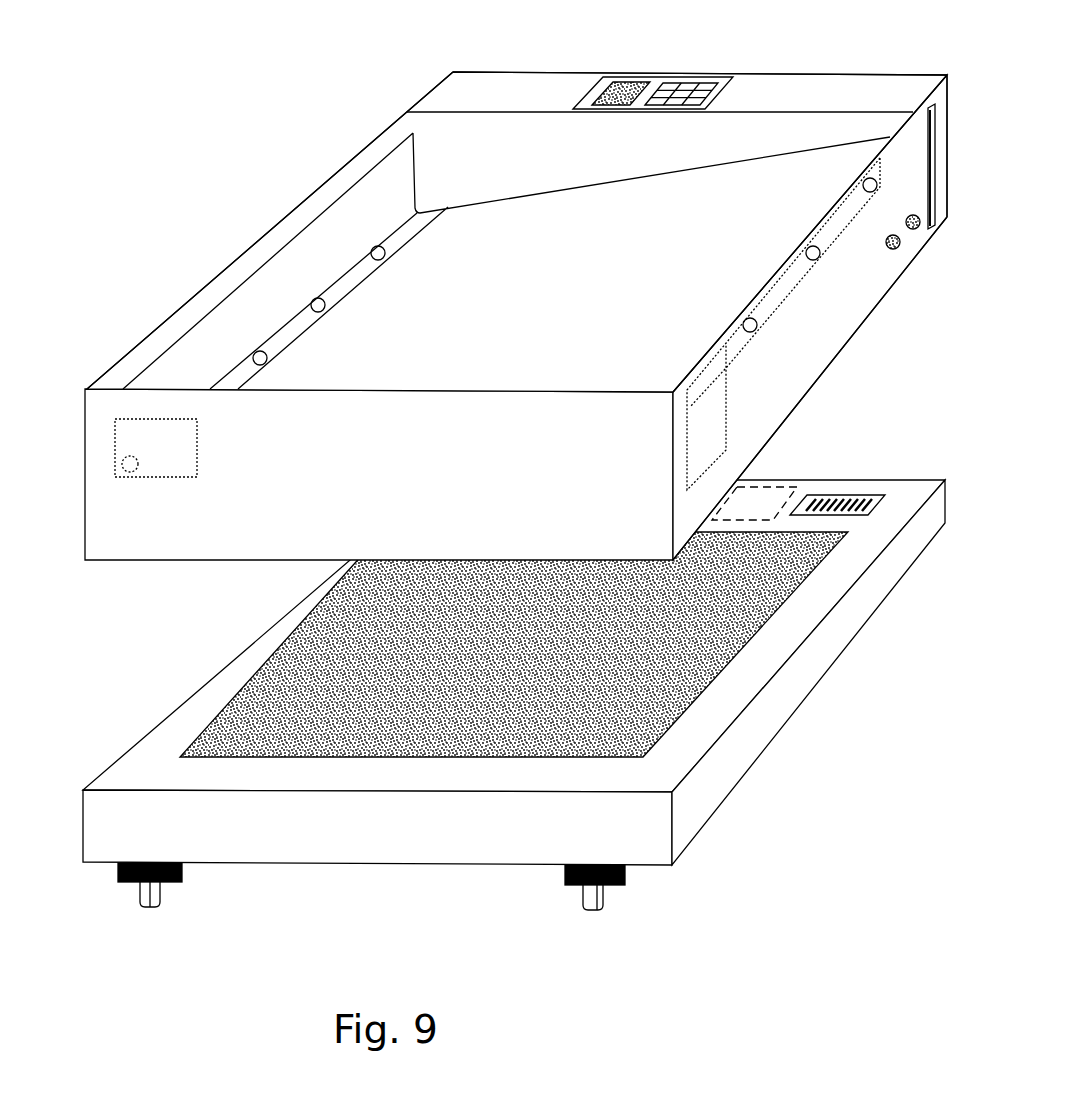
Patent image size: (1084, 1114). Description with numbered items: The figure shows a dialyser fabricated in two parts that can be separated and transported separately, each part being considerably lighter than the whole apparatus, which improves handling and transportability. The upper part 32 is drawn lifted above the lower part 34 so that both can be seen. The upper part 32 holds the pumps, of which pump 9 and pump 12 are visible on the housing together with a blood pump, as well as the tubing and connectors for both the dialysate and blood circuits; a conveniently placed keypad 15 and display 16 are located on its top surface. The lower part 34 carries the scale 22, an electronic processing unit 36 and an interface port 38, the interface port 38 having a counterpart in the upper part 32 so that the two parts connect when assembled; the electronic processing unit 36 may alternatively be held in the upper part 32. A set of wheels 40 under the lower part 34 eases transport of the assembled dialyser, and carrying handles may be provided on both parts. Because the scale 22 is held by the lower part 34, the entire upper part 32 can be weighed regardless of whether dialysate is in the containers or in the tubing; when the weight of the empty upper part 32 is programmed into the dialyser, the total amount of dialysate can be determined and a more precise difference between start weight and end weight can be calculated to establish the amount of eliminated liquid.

The pump 9 is at (156, 448).
The pump 12 is at (783, 324).
The keypad 15 is at (706, 78).
The display 16 is at (622, 84).
The scale 22 is at (514, 644).
The upper part 32 is at (348, 130).
The lower part 34 is at (177, 685).
The electronic processing unit 36 is at (783, 483).
The interface port 38 is at (858, 493).
The wheels 40 is at (573, 900).